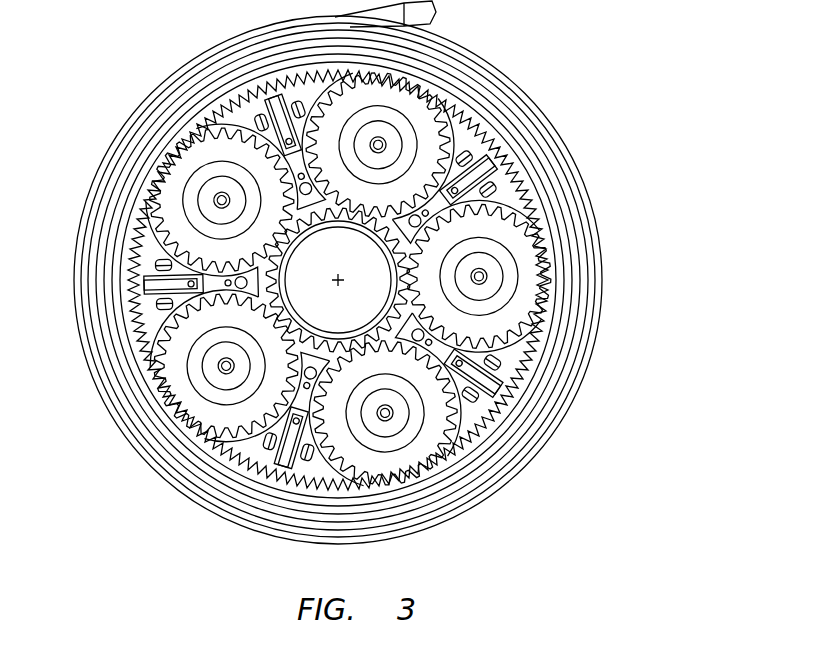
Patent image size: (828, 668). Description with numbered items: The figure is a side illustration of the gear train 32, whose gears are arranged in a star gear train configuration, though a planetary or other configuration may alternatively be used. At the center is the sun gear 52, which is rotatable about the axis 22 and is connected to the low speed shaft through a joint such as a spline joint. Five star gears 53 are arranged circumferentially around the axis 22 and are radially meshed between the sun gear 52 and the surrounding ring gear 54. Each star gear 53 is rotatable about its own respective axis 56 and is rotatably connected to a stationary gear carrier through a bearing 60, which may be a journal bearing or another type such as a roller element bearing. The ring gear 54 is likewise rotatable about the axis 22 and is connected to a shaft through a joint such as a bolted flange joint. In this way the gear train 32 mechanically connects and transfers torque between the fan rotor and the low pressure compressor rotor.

The axis 22 is at (340, 288).
The gear train 32 is at (130, 160).
The sun gear 52 is at (305, 445).
The star gear 53 is at (185, 172).
The ring gear 54 is at (548, 176).
The axis 56 is at (214, 204).
The bearing 60 is at (205, 228).